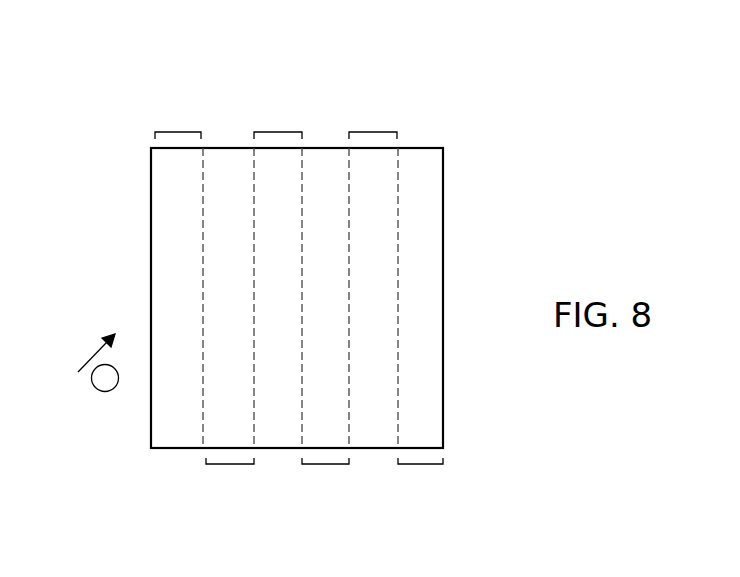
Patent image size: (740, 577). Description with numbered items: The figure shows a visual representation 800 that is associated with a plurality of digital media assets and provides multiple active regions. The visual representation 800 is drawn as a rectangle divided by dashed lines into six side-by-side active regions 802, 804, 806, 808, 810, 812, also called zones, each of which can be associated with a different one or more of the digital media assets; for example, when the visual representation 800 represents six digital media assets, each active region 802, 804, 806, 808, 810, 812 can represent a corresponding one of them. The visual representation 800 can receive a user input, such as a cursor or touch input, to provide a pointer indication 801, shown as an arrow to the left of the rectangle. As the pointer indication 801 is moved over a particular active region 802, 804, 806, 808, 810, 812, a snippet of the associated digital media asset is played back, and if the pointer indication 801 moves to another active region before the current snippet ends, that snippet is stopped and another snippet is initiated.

The visual representation 800 is at (151, 211).
The pointer indication 801 is at (85, 355).
The active region 802 is at (186, 132).
The active region 804 is at (218, 464).
The active region 806 is at (286, 132).
The active region 808 is at (314, 464).
The active region 810 is at (381, 132).
The active region 812 is at (410, 464).